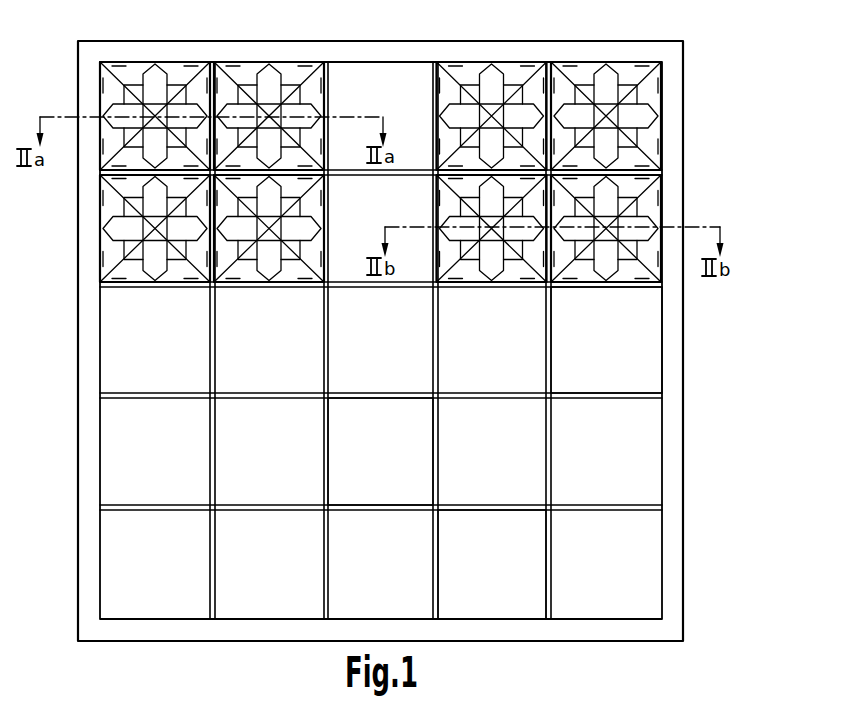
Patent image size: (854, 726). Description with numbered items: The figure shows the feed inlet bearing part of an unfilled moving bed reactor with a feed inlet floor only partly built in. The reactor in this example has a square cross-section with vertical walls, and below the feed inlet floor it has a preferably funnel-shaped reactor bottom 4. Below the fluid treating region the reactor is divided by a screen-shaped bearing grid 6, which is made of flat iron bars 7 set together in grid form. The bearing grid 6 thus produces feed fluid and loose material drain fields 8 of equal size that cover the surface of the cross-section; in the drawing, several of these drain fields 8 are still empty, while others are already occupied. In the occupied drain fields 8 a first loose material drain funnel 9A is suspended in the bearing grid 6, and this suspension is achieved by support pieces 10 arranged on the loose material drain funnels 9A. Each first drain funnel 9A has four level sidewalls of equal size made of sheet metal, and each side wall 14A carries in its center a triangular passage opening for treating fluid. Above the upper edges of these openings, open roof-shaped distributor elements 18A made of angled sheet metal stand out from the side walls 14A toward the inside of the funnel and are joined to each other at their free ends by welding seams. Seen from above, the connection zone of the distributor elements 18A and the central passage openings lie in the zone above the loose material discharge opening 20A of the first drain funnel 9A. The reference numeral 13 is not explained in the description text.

The reactor bottom 4 is at (650, 26).
The bearing grid 6 is at (610, 344).
The flat iron bars 7 is at (552, 438).
The feed fluid and loose material drain fields 8 is at (380, 478).
The first loose material drain funnel 9A is at (160, 285).
The support pieces 10 is at (568, 283).
The grid frame 13 is at (673, 377).
The side wall 14A is at (533, 88).
The distributor elements 18A is at (292, 92).
The loose material discharge opening 20A is at (178, 88).